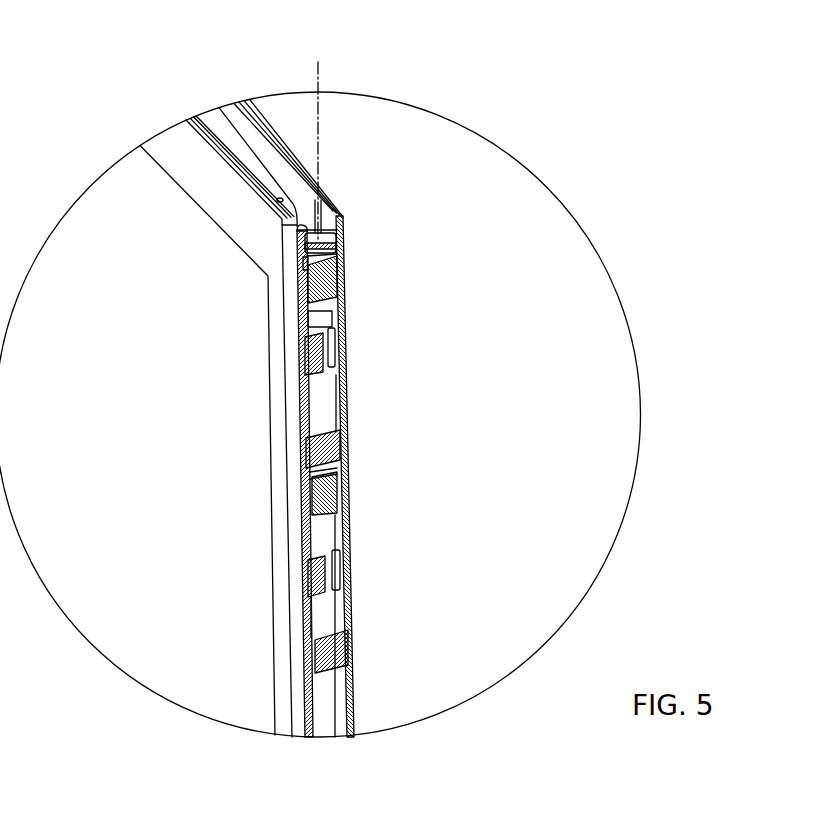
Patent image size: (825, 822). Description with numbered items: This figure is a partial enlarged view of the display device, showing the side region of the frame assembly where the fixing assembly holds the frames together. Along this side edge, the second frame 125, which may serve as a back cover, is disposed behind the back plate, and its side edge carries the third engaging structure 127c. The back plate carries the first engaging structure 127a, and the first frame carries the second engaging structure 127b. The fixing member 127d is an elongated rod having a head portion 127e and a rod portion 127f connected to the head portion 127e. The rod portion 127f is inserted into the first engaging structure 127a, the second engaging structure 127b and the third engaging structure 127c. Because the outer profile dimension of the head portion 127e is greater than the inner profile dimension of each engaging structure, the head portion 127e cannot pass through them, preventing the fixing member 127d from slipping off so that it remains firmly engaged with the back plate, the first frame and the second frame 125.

The second frame 125 is at (345, 408).
The first engaging structure 127a is at (335, 500).
The second engaging structure 127b is at (320, 352).
The third engaging structure 127c is at (339, 453).
The fixing member 127d is at (440, 198).
The head portion 127e is at (336, 234).
The rod portion 127f is at (318, 321).